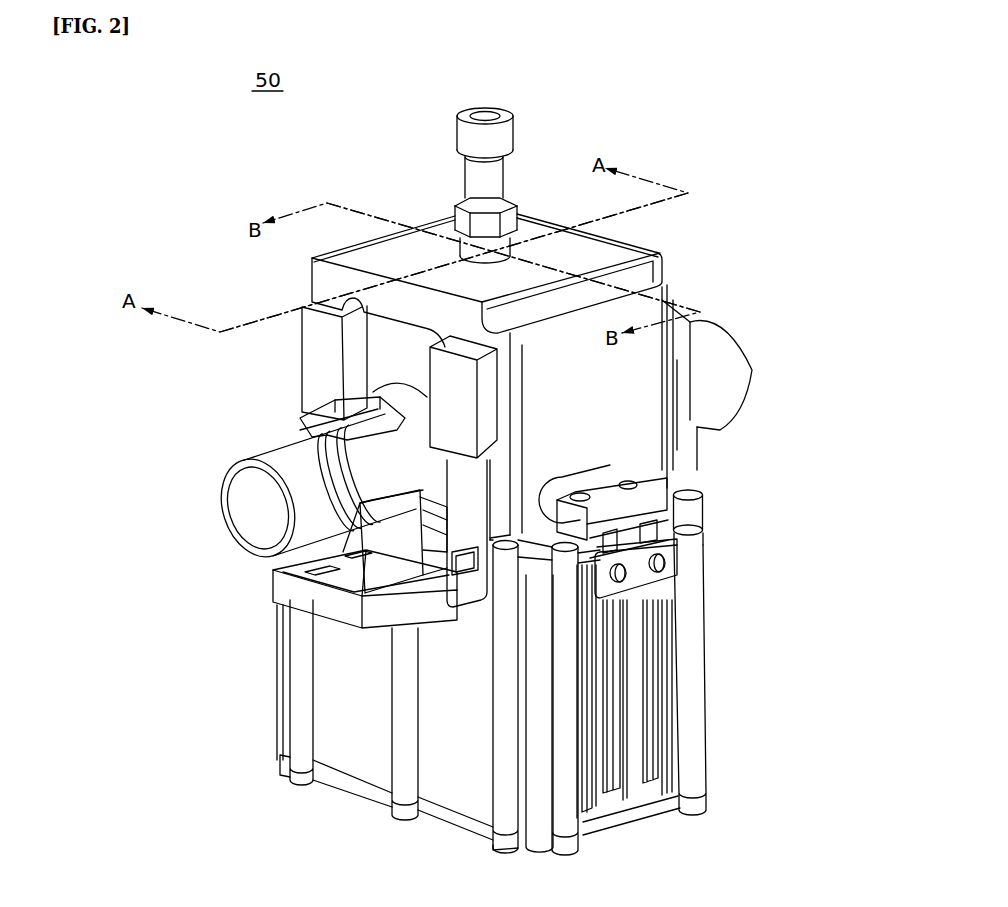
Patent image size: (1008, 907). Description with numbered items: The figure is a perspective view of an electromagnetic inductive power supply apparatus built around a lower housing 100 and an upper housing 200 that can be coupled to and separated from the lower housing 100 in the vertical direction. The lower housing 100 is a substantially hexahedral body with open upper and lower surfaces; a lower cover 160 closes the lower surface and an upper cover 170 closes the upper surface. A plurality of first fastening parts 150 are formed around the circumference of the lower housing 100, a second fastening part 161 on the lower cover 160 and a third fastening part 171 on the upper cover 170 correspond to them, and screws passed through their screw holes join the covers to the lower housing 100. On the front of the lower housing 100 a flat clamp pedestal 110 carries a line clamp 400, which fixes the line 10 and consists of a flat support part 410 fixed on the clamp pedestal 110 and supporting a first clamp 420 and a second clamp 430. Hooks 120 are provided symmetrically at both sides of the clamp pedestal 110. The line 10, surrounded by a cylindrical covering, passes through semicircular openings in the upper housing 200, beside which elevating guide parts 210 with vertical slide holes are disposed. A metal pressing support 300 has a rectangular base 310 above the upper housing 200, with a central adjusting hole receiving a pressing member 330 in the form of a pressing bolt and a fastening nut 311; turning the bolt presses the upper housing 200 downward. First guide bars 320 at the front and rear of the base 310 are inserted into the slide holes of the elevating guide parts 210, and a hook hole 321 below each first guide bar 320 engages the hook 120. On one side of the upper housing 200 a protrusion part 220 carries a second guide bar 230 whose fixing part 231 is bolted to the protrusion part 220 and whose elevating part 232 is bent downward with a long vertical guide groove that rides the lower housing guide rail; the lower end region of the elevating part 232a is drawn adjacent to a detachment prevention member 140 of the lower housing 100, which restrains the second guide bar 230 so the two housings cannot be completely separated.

The line 10 is at (733, 372).
The lower housing 100 is at (350, 700).
The clamp pedestal 110 is at (293, 592).
The hook 120 is at (453, 585).
The detachment prevention member 140 is at (640, 577).
The first fastening part 150 is at (407, 750).
The lower cover 160 is at (462, 813).
The second fastening part 161 is at (512, 833).
The upper cover 170 is at (650, 548).
The third fastening part 171 is at (698, 523).
The upper housing 200 is at (623, 390).
The elevating guide part 210 is at (490, 383).
The protrusion part 220 is at (560, 498).
The second guide bar 230 is at (829, 423).
The fixing part 231 is at (600, 497).
The elevating part 232 is at (620, 538).
The hinge pin 232a is at (690, 505).
The pressing support 300 is at (288, 263).
The base 310 is at (447, 222).
The fastening nut 311 is at (460, 237).
The first guide bar 320 is at (467, 480).
The hook hole 321 is at (465, 555).
The pressing member 330 is at (493, 170).
The line clamp 400 is at (105, 430).
The support part 410 is at (298, 562).
The first clamp 420 is at (313, 432).
The second clamp 430 is at (340, 442).